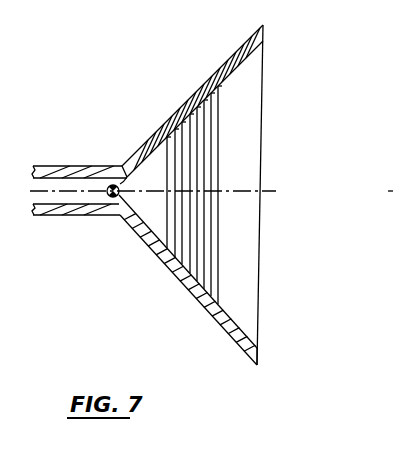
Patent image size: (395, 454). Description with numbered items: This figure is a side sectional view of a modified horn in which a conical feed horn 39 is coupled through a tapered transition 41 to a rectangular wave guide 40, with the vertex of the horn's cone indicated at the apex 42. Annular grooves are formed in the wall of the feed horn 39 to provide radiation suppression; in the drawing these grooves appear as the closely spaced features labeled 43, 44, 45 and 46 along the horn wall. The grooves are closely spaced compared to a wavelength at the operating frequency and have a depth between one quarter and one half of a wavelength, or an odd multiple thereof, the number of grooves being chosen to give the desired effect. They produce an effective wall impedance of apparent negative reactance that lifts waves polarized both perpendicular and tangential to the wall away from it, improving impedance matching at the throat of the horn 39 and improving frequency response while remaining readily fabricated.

The feed horn 39 is at (264, 33).
The wave guide 40 is at (68, 164).
The transition 41 is at (133, 175).
The apex 42 is at (110, 197).
The disc plate 43 is at (208, 305).
The disc plate 44 is at (190, 295).
The disc plate 45 is at (172, 273).
The disc plate 46 is at (162, 255).